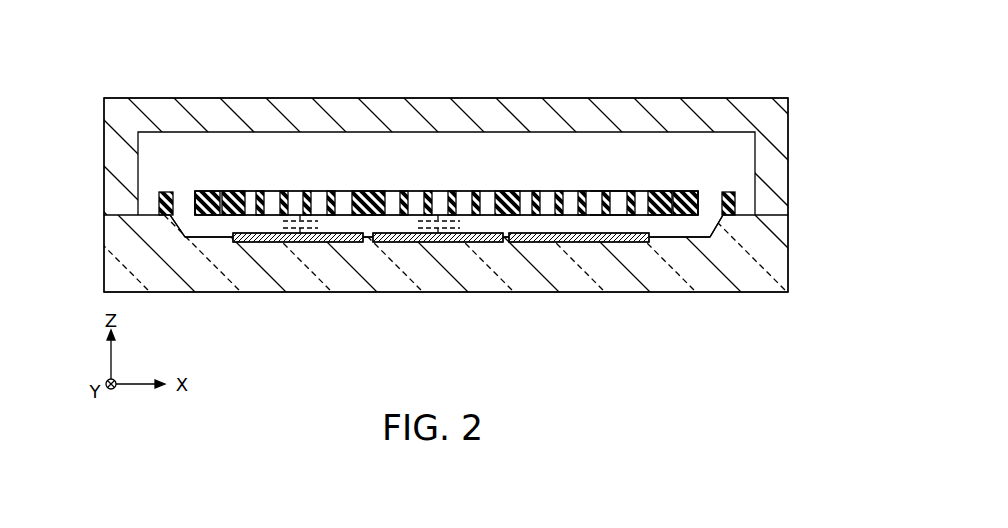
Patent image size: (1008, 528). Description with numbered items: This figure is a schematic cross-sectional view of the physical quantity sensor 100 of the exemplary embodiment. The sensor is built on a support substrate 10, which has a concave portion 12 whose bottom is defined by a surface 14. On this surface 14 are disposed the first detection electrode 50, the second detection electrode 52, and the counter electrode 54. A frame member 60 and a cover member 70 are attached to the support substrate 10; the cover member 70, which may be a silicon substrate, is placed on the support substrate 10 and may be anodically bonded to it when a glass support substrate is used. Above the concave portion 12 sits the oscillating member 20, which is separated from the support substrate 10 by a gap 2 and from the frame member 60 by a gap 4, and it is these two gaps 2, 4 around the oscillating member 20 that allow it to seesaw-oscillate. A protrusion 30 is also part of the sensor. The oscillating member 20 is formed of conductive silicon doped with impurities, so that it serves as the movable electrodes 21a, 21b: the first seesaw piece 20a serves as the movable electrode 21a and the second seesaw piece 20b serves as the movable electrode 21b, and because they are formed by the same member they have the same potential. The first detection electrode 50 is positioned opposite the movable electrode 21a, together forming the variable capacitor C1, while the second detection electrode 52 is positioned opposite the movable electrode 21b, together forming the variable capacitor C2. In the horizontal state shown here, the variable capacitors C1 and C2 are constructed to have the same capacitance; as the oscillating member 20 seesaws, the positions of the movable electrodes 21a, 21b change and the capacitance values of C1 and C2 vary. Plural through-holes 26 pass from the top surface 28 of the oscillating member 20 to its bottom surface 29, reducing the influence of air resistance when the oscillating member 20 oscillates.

The physical quantity sensor 100 is at (752, 84).
The cover member 70 is at (155, 110).
The support substrate 10 is at (763, 281).
The surface 14 is at (697, 232).
The concave portion 12 is at (372, 238).
The gap 2 is at (213, 222).
The oscillating member 20 is at (448, 135).
The first seesaw piece 20a is at (498, 191).
The second seesaw piece 20b is at (259, 191).
The movable electrode 21a is at (452, 191).
The movable electrode 21b is at (287, 191).
The through-hole 26 is at (549, 191).
The top surface 28 is at (608, 191).
The bottom surface 29 is at (608, 216).
The protrusion 30 is at (212, 191).
The gap 4 is at (181, 203).
The frame member 60 is at (160, 191).
The second detection electrode 52 is at (302, 242).
The first detection electrode 50 is at (450, 242).
The counter electrode 54 is at (580, 242).
The variable capacitor C1 is at (419, 204).
The variable capacitor C2 is at (320, 206).